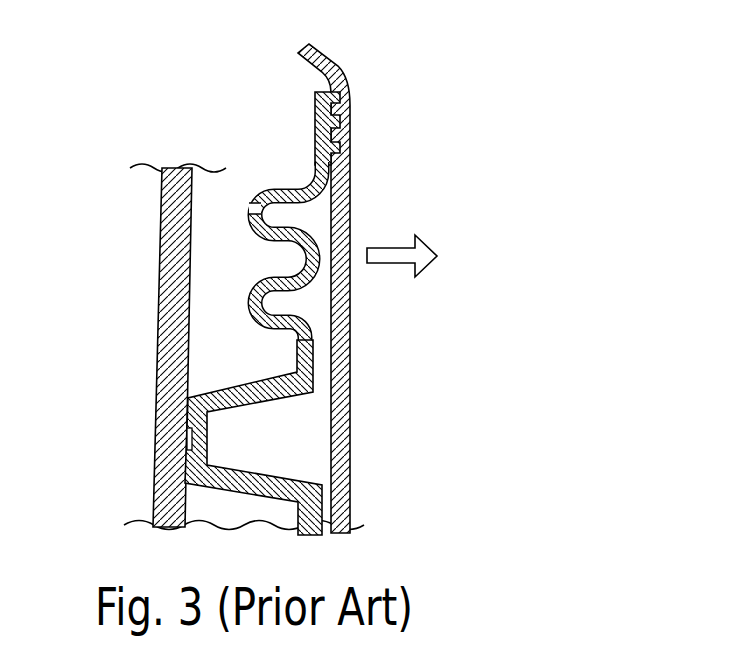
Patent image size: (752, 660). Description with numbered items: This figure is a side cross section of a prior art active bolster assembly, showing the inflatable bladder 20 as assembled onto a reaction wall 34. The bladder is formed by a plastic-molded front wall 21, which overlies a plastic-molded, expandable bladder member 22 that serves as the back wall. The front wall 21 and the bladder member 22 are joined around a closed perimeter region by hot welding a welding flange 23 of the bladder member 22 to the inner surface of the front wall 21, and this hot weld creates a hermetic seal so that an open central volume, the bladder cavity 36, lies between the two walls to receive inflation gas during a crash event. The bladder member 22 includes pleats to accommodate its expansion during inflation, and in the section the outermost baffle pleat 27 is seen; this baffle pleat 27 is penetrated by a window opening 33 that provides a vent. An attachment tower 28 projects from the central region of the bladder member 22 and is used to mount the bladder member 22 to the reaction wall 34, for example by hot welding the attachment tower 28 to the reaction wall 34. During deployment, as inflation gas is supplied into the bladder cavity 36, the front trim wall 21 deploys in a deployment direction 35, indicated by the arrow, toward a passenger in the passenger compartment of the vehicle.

The inflatable bladder 20 is at (217, 103).
The front wall 21 is at (351, 178).
The bladder member 22 is at (260, 236).
The welding flange 23 is at (313, 125).
The baffle pleat 27 is at (280, 186).
The attachment tower 28 is at (237, 387).
The window opening 33 is at (252, 209).
The reaction wall 34 is at (158, 285).
The deployment direction 35 is at (393, 241).
The bladder cavity 36 is at (305, 308).